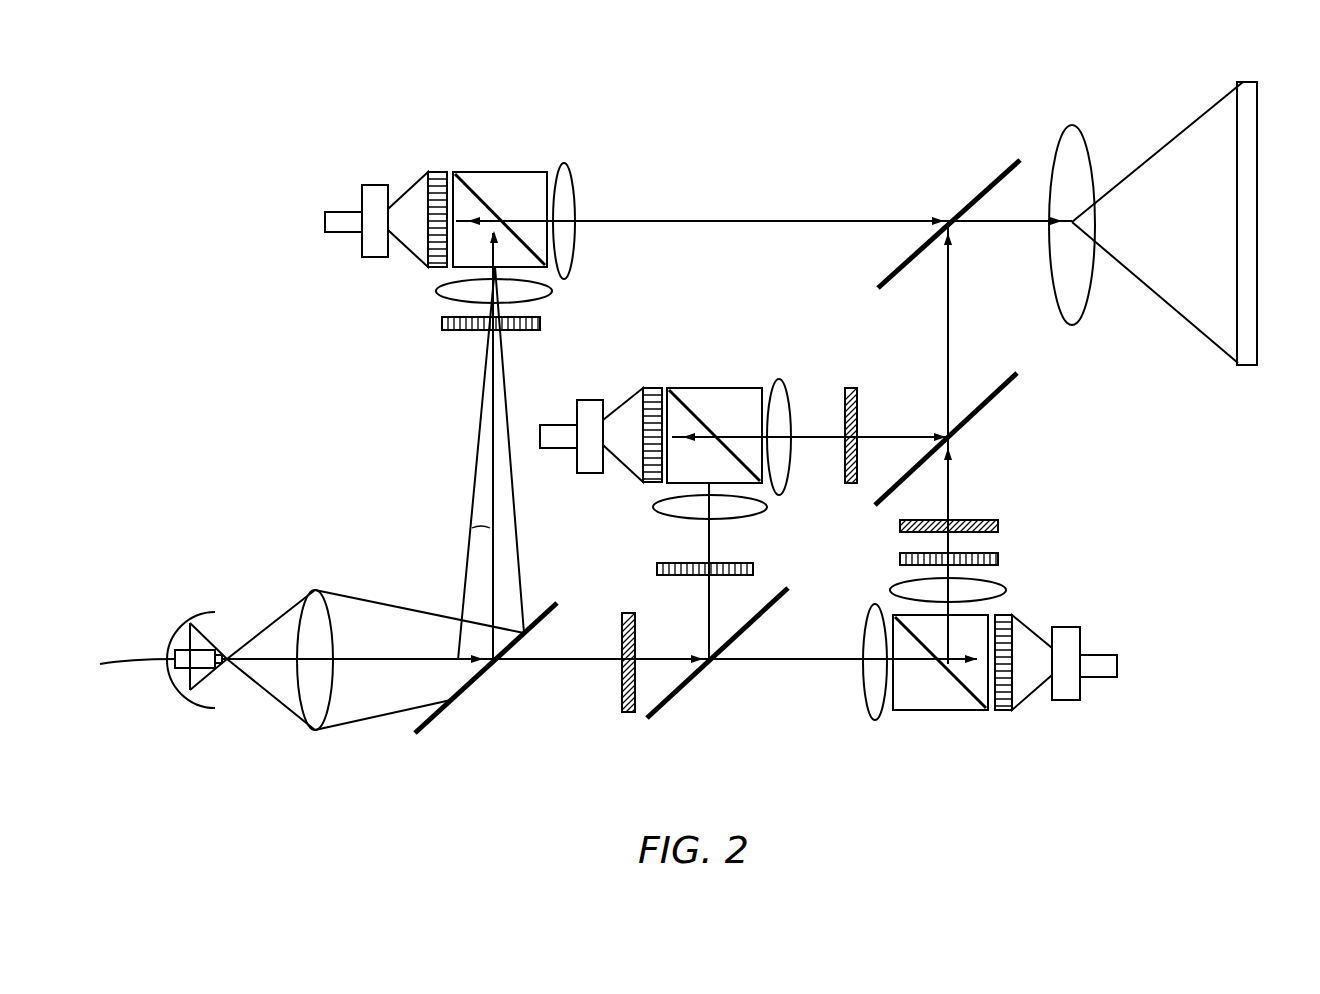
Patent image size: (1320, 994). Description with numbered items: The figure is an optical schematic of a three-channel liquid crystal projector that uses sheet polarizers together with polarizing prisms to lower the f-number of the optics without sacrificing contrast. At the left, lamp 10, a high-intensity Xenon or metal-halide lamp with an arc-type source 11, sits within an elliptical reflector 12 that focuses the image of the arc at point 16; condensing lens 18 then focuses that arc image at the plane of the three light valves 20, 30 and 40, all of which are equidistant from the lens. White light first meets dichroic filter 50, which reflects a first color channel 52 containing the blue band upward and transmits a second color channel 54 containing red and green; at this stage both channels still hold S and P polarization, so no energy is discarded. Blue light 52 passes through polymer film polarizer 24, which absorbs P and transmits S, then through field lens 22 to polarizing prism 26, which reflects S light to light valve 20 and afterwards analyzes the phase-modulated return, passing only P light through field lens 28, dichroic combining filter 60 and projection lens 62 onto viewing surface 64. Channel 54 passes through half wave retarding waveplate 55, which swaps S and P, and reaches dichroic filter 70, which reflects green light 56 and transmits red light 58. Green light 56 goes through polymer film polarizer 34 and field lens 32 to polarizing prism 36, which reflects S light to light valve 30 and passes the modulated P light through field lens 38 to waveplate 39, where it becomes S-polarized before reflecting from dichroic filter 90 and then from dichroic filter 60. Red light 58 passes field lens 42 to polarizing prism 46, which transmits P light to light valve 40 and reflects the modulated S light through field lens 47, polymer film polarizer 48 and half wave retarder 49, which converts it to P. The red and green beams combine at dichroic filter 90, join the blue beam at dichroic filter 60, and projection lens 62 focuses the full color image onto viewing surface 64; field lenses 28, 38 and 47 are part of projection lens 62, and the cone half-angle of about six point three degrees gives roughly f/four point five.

The lamp 10 is at (168, 660).
The lamp 11 is at (175, 664).
The reflector 12 is at (198, 708).
The point 16 is at (229, 656).
The condensing lens 18 is at (315, 727).
The liquid crystal light valve 20 is at (420, 172).
The field lens 22 is at (548, 292).
The polymer film polarizer 24 is at (440, 327).
The polarizing prism 26 is at (505, 172).
The field lens 28 is at (577, 182).
The liquid crystal light valve 30 is at (650, 388).
The field lens 32 is at (764, 510).
The polymer film polarizer 34 is at (754, 568).
The polarizing prism 36 is at (715, 388).
The field lens 38 is at (782, 378).
The waveplate 39 is at (855, 388).
The liquid crystal light valve 40 is at (1020, 705).
The field lens 42 is at (875, 722).
The polarizing prism 46 is at (967, 710).
The field lens 47 is at (1000, 590).
The polymer film polarizer 48 is at (1000, 553).
The half wave retarder 49 is at (1000, 520).
The dichroic filter 50 is at (430, 722).
The first color channel 52 is at (490, 422).
The second color channel 54 is at (582, 665).
The half wave retarding waveplate 55 is at (627, 613).
The green light 56 is at (707, 595).
The red light 58 is at (778, 667).
The dichroic combining filter 60 is at (1003, 168).
The projection lens 62 is at (1068, 125).
The viewing surface 64 is at (1243, 82).
The dichroic filter 70 is at (675, 695).
The dichroic filter 90 is at (988, 403).